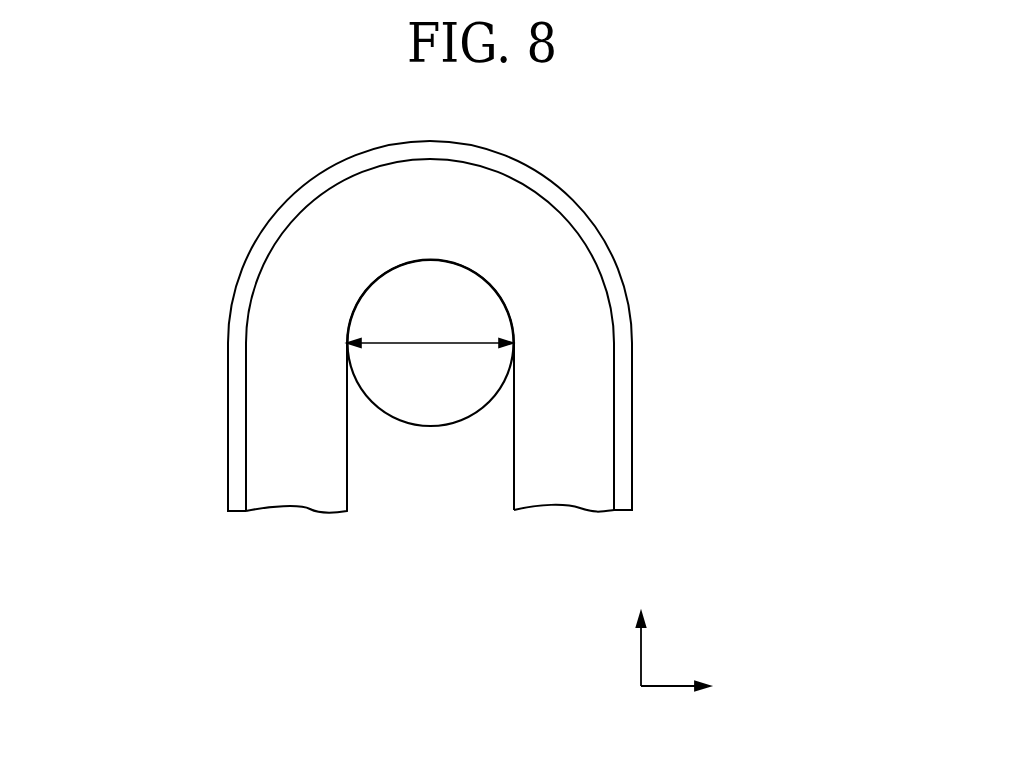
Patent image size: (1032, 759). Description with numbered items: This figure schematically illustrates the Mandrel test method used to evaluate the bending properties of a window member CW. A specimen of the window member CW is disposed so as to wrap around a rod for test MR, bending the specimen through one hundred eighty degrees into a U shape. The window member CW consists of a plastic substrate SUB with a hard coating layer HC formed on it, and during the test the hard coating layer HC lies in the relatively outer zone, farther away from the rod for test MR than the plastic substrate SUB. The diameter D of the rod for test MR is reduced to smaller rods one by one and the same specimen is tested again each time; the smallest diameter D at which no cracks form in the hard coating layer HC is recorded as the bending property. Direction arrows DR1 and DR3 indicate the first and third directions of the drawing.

The plastic substrate SUB is at (599, 341).
The hard coating layer HC is at (622, 381).
The window member CW is at (501, 327).
The rod for test MR is at (477, 380).
The diameter of the rod for test D is at (430, 333).
The first direction DR1 is at (694, 686).
The third direction DR3 is at (642, 636).